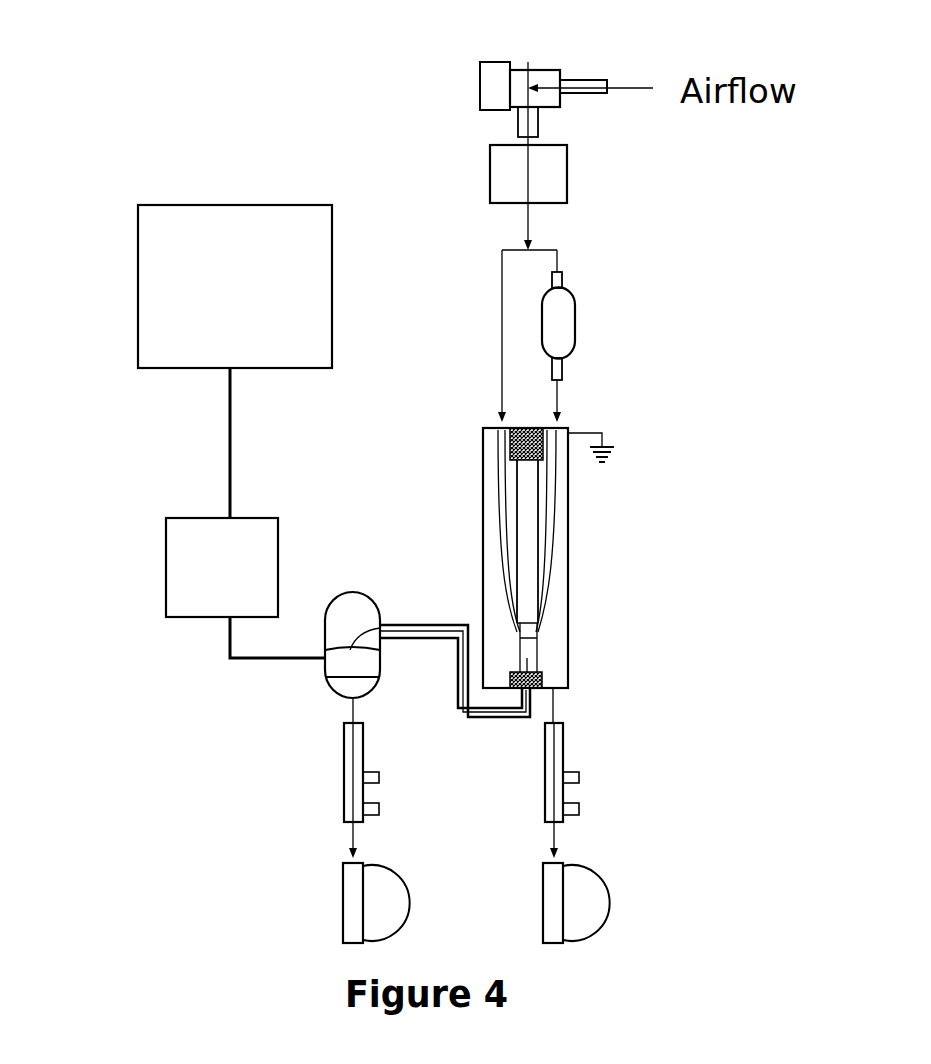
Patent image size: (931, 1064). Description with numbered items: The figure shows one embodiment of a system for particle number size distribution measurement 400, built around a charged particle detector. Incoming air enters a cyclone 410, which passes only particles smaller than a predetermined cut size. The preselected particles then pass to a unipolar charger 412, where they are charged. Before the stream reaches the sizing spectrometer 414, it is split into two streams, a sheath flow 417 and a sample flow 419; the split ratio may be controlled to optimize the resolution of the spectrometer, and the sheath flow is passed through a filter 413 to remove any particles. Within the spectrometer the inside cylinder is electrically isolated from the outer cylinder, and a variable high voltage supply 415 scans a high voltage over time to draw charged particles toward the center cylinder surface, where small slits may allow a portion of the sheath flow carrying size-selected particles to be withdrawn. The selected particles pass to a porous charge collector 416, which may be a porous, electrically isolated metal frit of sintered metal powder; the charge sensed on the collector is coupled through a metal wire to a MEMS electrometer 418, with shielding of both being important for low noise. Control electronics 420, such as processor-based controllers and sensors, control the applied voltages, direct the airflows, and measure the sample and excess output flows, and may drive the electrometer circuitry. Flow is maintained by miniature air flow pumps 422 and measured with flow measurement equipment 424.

The system for particle number size distribution measurement 400 is at (220, 80).
The cyclone 410 is at (547, 77).
The unipolar charger 412 is at (560, 180).
The filter 413 is at (562, 338).
The sizing spectrometer 414 is at (568, 558).
The variable high voltage supply 415 is at (537, 660).
The porous charge collector 416 is at (345, 608).
The sheath flow 417 is at (557, 408).
The MEMS electrometer 418 is at (202, 550).
The sample flow 419 is at (500, 360).
The control electronics 420 is at (203, 225).
The miniature air flow pumps 422 is at (580, 897).
The flow measurement equipment 424 is at (350, 782).